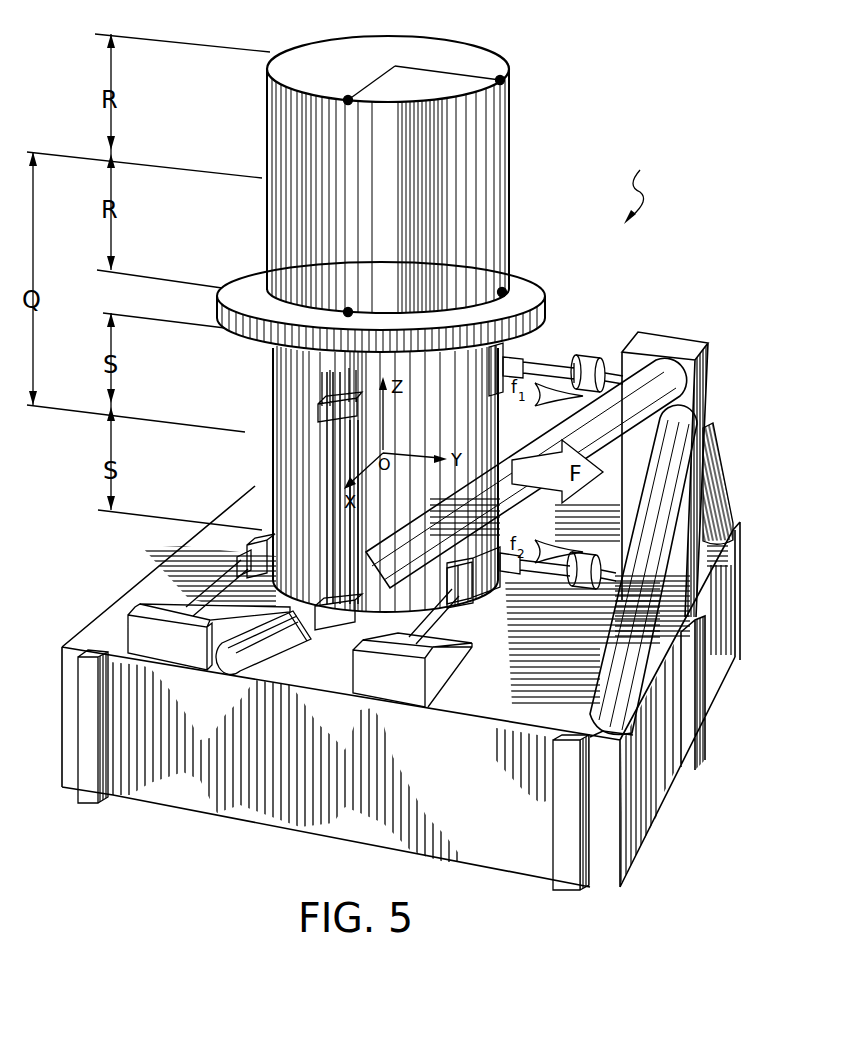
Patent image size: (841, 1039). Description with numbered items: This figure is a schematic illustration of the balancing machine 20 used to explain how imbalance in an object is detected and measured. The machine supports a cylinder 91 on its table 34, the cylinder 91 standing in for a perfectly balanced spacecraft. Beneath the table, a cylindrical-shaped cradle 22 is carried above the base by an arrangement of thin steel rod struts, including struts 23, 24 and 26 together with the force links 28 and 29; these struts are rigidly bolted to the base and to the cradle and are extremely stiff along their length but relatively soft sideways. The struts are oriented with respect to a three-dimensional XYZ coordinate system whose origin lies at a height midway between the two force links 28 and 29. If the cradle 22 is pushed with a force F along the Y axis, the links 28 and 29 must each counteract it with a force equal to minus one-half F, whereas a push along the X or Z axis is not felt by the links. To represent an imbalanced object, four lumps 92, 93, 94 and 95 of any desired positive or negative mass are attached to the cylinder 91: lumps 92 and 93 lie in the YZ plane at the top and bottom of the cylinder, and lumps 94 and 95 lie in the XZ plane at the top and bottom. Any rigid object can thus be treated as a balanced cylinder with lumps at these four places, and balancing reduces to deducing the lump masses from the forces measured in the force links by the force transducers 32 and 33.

The balancer 20 is at (646, 184).
The cradle 22 is at (273, 405).
The strut 23 is at (210, 590).
The strut 24 is at (432, 615).
The strut 26 is at (330, 487).
The force link 28 is at (548, 367).
The force link 29 is at (513, 578).
The force transducer 32 is at (595, 357).
The force transducer 33 is at (579, 592).
The table 34 is at (245, 290).
The cylinder 91 is at (283, 150).
The lump 92 is at (500, 80).
The lump 93 is at (502, 292).
The lump 94 is at (348, 98).
The lump 95 is at (348, 312).